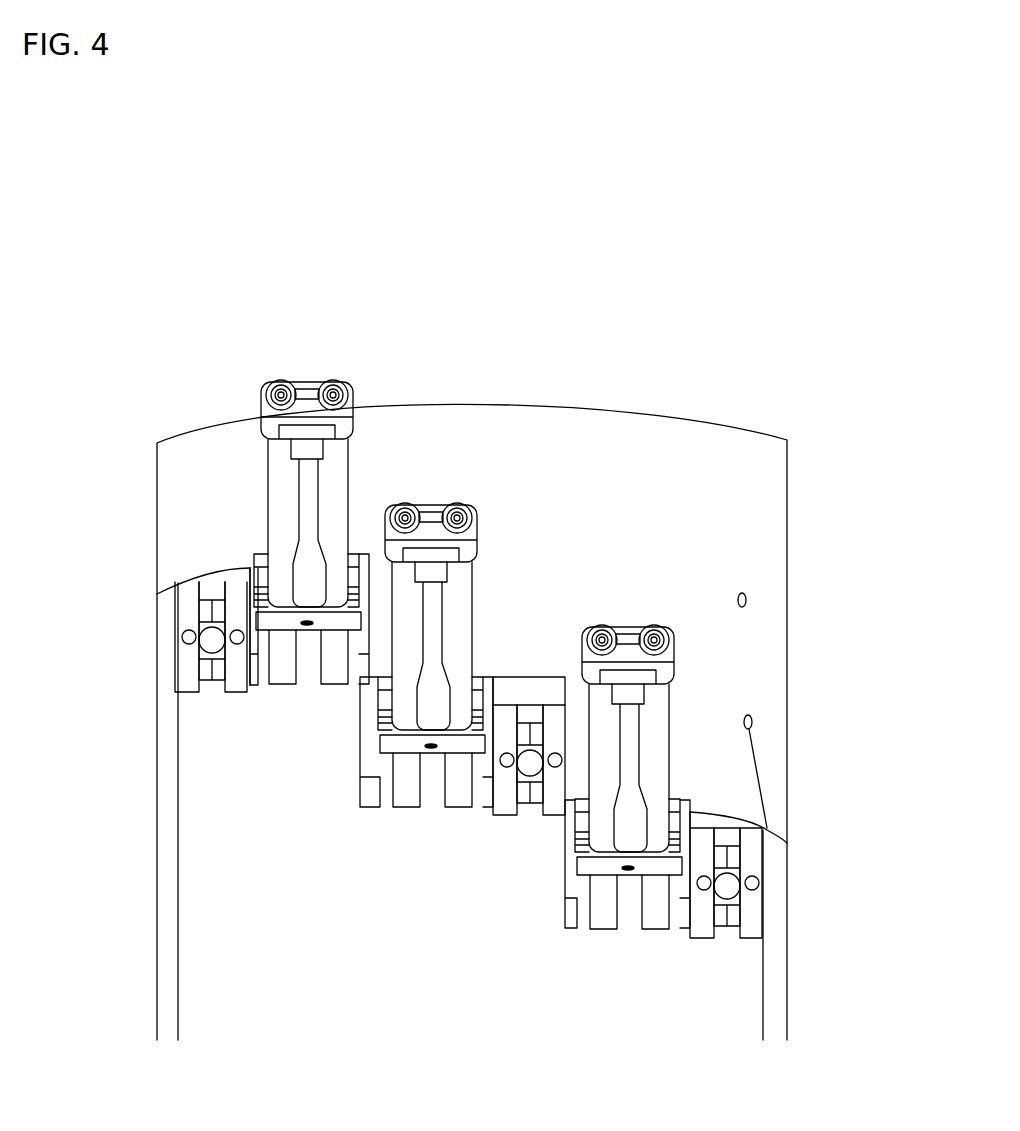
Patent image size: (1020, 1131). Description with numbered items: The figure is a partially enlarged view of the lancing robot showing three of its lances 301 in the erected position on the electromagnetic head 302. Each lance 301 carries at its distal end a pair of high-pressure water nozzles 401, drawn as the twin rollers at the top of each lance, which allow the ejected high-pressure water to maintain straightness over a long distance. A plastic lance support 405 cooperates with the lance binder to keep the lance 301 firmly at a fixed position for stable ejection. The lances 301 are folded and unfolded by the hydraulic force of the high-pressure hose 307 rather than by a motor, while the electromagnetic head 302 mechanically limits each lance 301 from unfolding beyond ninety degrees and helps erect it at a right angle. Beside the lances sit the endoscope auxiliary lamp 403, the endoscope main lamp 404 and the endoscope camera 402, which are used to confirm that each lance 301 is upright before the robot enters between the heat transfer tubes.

The lance 301 is at (478, 654).
The electromagnetic head 302 is at (541, 500).
The high-pressure hose 307 is at (629, 957).
The high-pressure water nozzles 401 is at (307, 339).
The endoscope camera 402 is at (728, 886).
The endoscope auxiliary lamp 403 is at (237, 646).
The endoscope main lamp 404 is at (522, 793).
The plastic lance support 405 is at (717, 739).